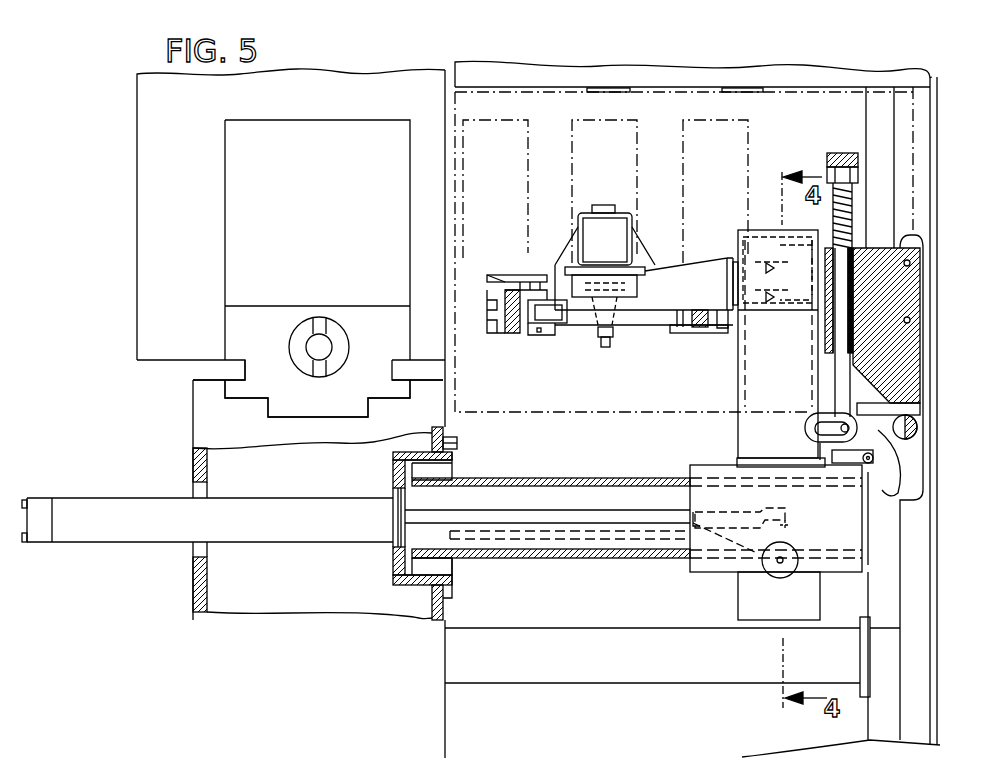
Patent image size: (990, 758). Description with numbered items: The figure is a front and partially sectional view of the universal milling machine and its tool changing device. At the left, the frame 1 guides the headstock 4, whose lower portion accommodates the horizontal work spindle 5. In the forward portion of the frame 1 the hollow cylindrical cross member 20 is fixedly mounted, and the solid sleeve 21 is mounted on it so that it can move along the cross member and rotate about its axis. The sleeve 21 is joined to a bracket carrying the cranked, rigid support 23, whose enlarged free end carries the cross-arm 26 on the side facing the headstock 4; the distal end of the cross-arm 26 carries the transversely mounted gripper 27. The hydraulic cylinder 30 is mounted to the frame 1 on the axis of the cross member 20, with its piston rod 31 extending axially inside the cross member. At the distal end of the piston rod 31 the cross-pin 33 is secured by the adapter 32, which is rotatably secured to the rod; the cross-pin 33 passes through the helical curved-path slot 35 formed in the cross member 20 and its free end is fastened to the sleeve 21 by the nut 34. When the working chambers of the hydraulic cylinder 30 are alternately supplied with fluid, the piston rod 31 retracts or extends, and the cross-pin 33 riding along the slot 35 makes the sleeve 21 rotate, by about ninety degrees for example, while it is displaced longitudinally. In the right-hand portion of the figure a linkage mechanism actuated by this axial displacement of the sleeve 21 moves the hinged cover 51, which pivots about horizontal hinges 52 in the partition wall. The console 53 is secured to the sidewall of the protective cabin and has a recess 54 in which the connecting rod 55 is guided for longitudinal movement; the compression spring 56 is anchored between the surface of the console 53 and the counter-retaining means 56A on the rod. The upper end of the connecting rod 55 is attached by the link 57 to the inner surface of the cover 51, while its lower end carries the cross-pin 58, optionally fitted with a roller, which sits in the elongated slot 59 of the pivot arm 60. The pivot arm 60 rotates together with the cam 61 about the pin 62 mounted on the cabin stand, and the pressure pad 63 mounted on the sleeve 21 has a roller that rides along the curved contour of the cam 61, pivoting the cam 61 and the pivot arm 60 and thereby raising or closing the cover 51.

The frame 1 is at (636, 669).
The headstock 4 is at (240, 390).
The horizontal work spindle 5 is at (303, 332).
The hollow cylindrical cross member 20 is at (505, 560).
The sleeve 21 is at (718, 463).
The support 23 is at (789, 359).
The cross-arm 26 is at (680, 297).
The gripper 27 is at (580, 290).
The hydraulic cylinder 30 is at (297, 544).
The piston rod 31 is at (403, 527).
The adapter 32 is at (732, 520).
The cross-pin 33 is at (790, 534).
The nut 34 is at (788, 573).
The curved-path slot 35 is at (630, 535).
The hinged cover 51 is at (528, 395).
The horizontal hinges 52 is at (732, 87).
The console 53 is at (907, 295).
The recess 54 is at (852, 320).
The connecting rod 55 is at (842, 283).
The compression spring 56 is at (852, 220).
The counter-retaining means 56A is at (853, 190).
The link 57 is at (858, 168).
The cross-pin 58 is at (913, 403).
The elongated slot 59 is at (807, 432).
The pivot arm 60 is at (880, 436).
The cam 61 is at (913, 482).
The pin 62 is at (917, 427).
The pressure pad 63 is at (853, 470).